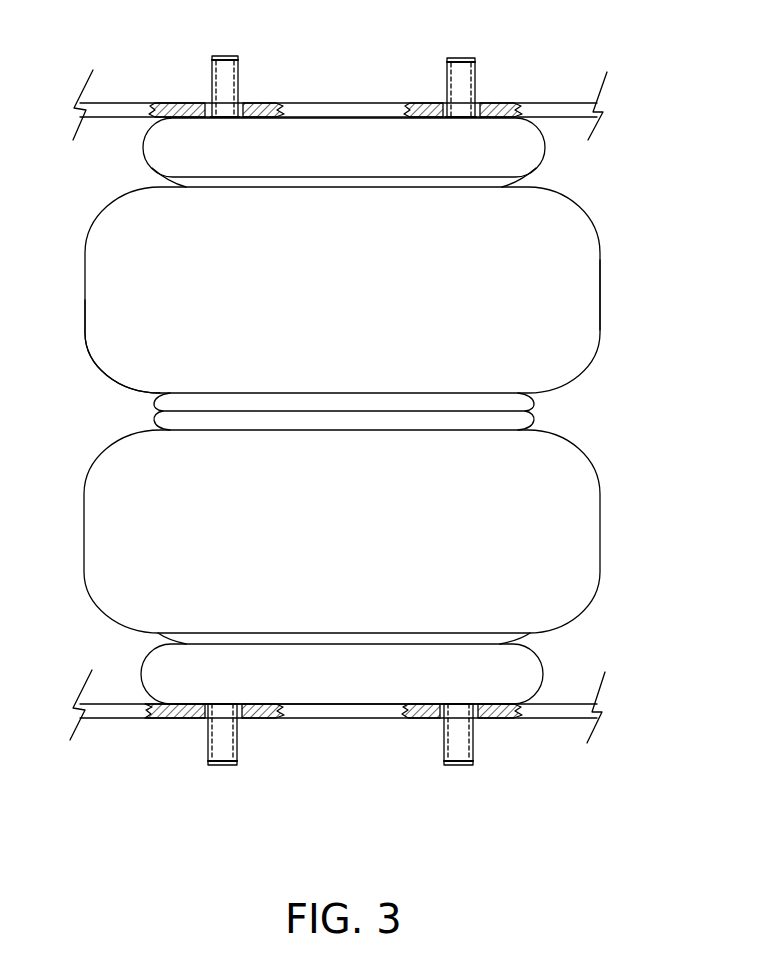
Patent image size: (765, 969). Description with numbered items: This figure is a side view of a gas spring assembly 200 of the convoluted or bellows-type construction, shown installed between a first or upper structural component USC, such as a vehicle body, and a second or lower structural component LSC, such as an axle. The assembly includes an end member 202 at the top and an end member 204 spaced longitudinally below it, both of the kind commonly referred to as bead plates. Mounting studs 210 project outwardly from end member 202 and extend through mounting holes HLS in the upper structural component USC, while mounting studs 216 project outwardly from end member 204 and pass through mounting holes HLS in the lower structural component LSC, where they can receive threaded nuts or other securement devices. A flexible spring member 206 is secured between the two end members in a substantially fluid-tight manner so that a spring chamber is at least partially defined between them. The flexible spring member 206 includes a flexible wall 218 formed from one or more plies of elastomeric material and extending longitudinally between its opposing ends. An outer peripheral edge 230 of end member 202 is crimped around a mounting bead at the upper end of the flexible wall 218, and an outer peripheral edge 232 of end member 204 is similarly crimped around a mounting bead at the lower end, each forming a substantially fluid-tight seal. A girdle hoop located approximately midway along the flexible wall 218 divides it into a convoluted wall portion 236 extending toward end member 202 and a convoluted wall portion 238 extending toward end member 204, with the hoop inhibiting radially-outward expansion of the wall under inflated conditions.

The gas spring assembly 200 is at (606, 178).
The end member 202 is at (319, 124).
The end member 204 is at (329, 698).
The flexible spring member 206 is at (112, 238).
The mounting studs 210 is at (239, 62).
The mounting studs 216 is at (238, 745).
The flexible wall 218 is at (110, 366).
The outer peripheral edge 230 is at (145, 162).
The outer peripheral edge 232 is at (141, 672).
The convoluted wall portion 236 is at (612, 276).
The convoluted wall portion 238 is at (610, 526).
The upper structural component USC is at (120, 103).
The lower structural component LSC is at (121, 718).
The mounting holes HLS is at (198, 103).